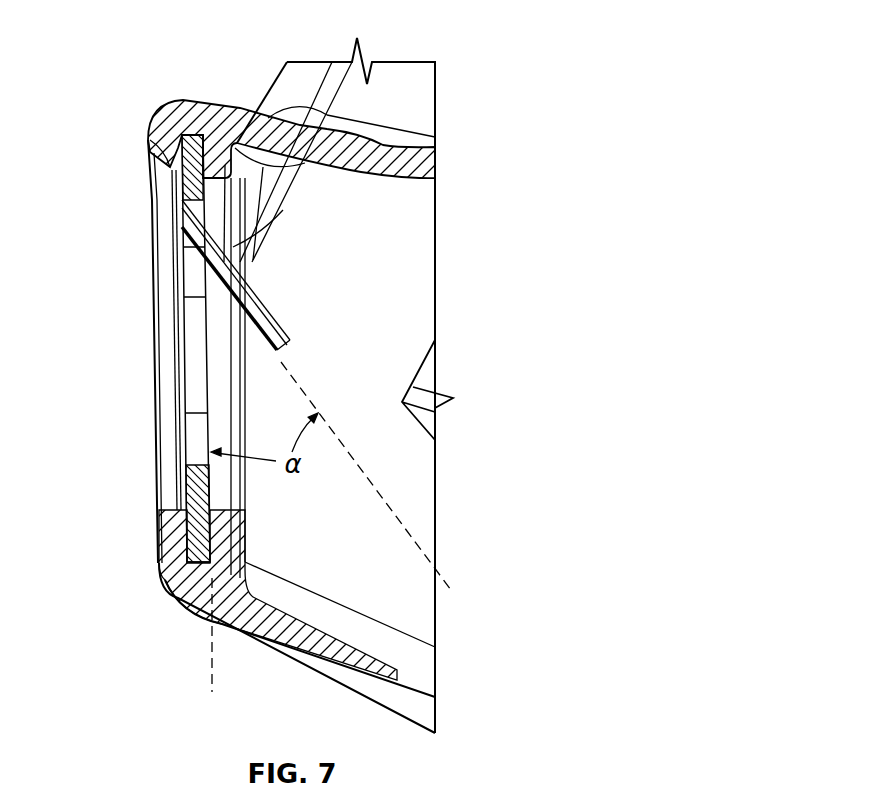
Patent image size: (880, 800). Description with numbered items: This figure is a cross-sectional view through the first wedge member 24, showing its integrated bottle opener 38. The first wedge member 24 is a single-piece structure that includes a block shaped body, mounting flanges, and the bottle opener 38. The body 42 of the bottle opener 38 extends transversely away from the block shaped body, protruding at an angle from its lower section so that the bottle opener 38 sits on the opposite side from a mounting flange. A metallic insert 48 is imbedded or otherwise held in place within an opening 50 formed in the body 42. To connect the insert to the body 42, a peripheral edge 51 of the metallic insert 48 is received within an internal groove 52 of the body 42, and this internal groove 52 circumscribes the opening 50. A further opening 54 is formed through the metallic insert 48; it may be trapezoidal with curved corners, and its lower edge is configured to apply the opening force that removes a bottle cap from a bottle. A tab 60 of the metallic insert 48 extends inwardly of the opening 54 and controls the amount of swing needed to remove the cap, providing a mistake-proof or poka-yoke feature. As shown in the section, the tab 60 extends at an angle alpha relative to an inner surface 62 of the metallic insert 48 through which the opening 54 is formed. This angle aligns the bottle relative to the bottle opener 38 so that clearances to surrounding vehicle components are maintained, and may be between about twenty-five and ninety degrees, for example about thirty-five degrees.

The first wedge member 24 is at (441, 52).
The bottle opener 38 is at (138, 274).
The body 42 is at (172, 580).
The metallic insert 48 is at (186, 355).
The opening 50 is at (218, 198).
The peripheral edge 51 is at (183, 157).
The internal groove 52 is at (211, 104).
The opening 54 is at (198, 390).
The tab 60 is at (260, 306).
The inner surface 62 is at (213, 549).